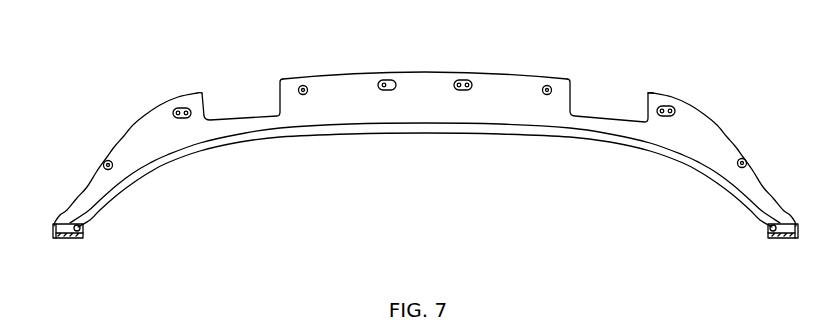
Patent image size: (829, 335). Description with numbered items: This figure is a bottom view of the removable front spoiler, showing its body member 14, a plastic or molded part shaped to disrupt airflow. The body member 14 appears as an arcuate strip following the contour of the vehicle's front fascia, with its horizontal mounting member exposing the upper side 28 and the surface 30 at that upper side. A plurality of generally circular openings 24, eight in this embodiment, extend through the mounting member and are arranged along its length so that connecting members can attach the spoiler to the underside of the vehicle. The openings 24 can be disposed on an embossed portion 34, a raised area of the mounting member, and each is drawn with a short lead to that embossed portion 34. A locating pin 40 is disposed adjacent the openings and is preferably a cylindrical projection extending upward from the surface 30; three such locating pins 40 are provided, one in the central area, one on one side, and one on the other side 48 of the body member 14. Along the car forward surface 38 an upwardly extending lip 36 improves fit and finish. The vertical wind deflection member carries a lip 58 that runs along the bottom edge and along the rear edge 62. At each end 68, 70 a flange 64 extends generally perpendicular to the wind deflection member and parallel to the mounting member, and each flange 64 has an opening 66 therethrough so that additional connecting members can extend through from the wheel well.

The body member 14 is at (425, 72).
The openings 24 is at (105, 162).
The upper side 28 is at (350, 95).
The surface 30 is at (500, 101).
The embossed portion 34 is at (112, 167).
The lip 36 is at (565, 78).
The car forward surface 38 is at (287, 78).
The locating pin 40 is at (192, 115).
The other side 48 is at (133, 125).
The lip 58 is at (603, 144).
The rear edge 62 is at (797, 220).
The flange 64 is at (53, 227).
The opening 66 is at (67, 238).
The end 68 is at (767, 224).
The end 70 is at (83, 228).